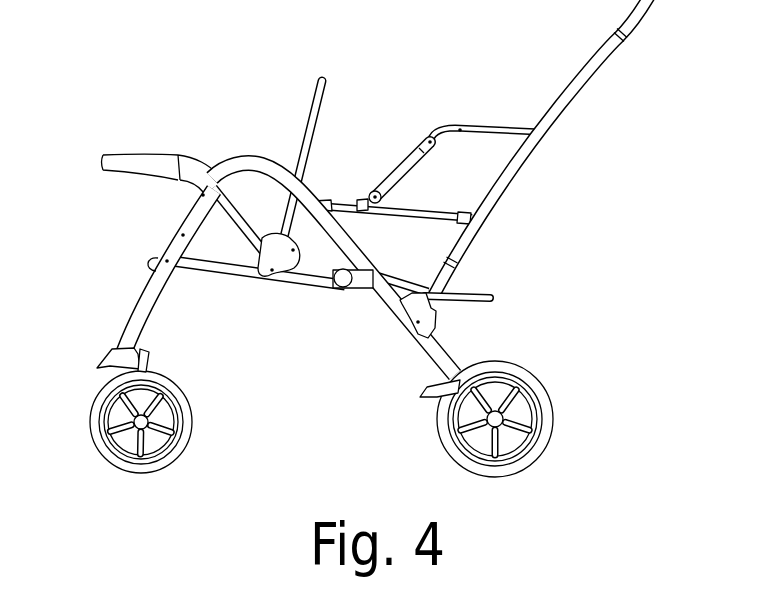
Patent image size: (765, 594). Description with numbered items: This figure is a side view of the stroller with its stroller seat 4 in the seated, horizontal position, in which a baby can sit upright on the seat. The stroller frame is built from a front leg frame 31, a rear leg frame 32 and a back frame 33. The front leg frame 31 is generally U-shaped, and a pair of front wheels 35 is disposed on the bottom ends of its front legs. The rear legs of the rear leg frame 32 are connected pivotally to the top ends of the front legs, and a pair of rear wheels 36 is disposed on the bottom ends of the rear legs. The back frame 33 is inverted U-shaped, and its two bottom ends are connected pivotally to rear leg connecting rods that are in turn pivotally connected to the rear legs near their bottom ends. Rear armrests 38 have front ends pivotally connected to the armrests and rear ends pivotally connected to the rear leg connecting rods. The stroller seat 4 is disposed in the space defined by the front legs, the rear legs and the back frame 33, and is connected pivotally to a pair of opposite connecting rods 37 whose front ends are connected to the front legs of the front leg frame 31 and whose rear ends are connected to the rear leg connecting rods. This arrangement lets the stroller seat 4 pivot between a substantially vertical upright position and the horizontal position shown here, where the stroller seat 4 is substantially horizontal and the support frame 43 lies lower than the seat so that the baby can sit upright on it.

The stroller seat 4 is at (363, 280).
The front leg frame 31 is at (140, 300).
The rear leg frame 32 is at (442, 357).
The back frame 33 is at (595, 67).
The front wheels 35 is at (180, 452).
The rear wheels 36 is at (457, 457).
The connecting rods 37 is at (205, 267).
The rear armrests 38 is at (400, 170).
The support frame 43 is at (493, 300).